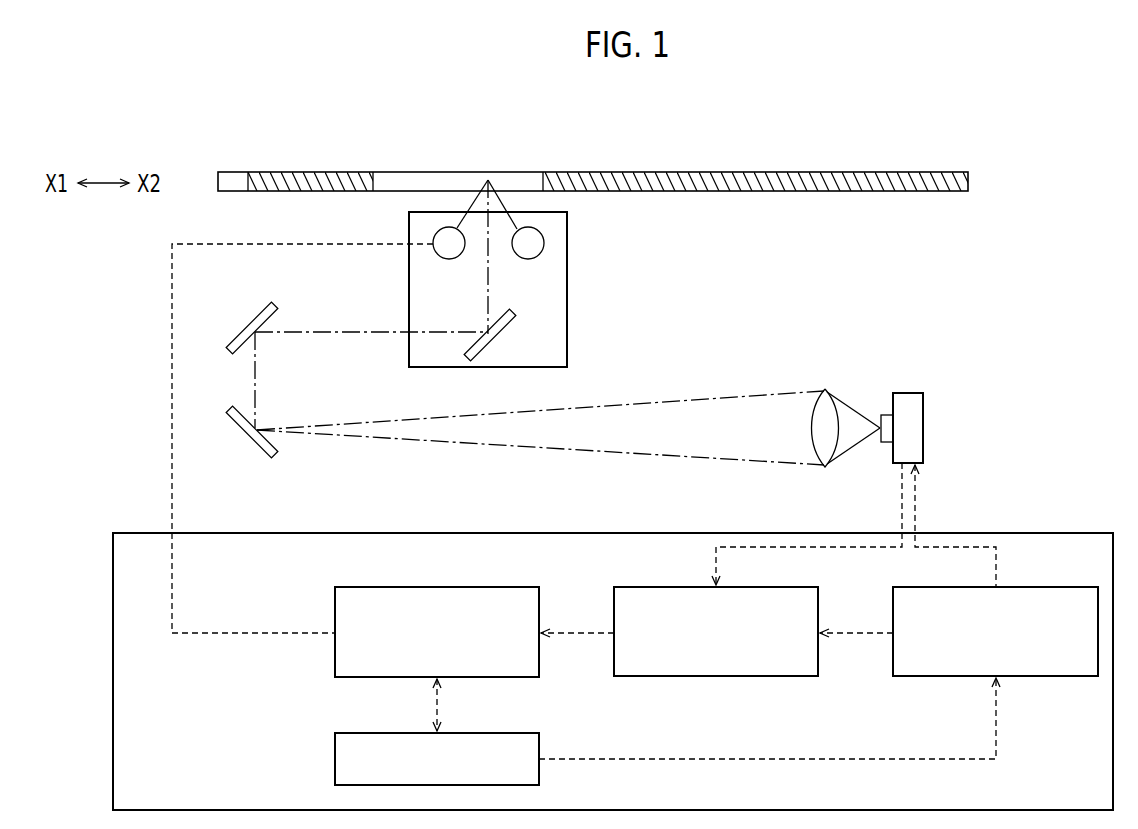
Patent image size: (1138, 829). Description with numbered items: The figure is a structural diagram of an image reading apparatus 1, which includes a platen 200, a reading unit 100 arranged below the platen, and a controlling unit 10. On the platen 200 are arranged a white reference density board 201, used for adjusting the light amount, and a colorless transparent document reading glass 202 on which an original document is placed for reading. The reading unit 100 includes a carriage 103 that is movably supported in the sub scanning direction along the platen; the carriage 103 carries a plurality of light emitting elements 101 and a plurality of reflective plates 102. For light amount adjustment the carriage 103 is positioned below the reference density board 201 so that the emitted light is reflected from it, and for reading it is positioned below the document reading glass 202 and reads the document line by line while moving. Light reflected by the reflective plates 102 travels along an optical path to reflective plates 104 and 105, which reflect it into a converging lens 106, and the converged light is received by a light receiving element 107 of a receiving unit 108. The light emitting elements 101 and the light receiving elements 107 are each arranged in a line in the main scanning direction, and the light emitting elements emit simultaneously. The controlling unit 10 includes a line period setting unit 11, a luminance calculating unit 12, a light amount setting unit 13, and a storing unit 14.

The image reading apparatus 1 is at (958, 128).
The reading unit 100 is at (960, 305).
The platen 200 is at (593, 146).
The reference density board 201 is at (447, 172).
The document reading glass 202 is at (643, 172).
The light emitting elements 101 is at (545, 243).
The reflective plates 102 is at (508, 322).
The carriage 103 is at (530, 273).
The reflective plate 104 is at (246, 326).
The reflective plate 105 is at (246, 438).
The converging lens 106 is at (818, 415).
The light receiving element 107 is at (885, 415).
The receiving unit 108 is at (925, 420).
The controlling unit 10 is at (268, 533).
The line period setting unit 11 is at (1008, 587).
The luminance calculating unit 12 is at (738, 587).
The light amount setting unit 13 is at (462, 587).
The storing unit 14 is at (462, 733).